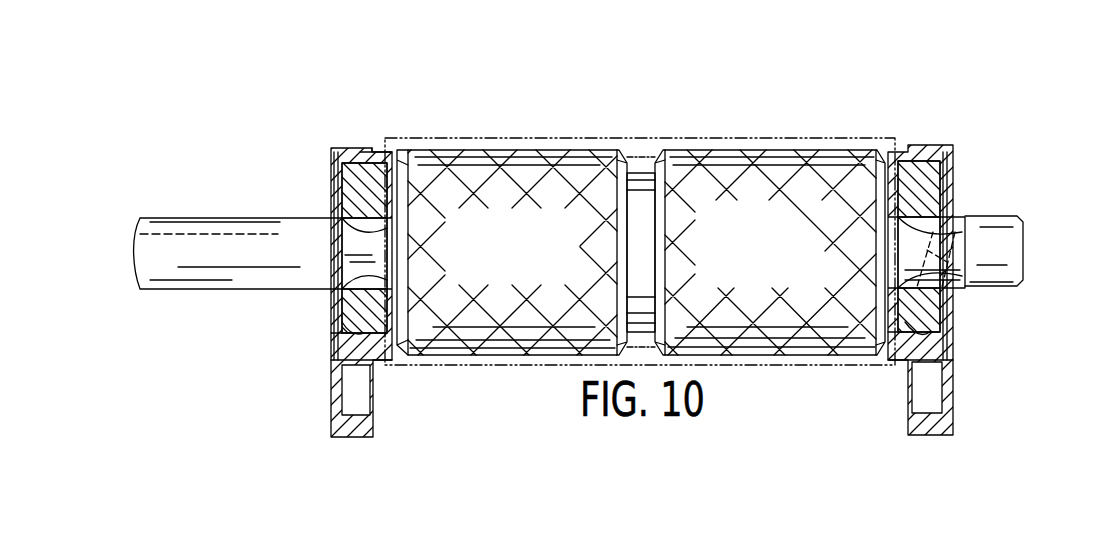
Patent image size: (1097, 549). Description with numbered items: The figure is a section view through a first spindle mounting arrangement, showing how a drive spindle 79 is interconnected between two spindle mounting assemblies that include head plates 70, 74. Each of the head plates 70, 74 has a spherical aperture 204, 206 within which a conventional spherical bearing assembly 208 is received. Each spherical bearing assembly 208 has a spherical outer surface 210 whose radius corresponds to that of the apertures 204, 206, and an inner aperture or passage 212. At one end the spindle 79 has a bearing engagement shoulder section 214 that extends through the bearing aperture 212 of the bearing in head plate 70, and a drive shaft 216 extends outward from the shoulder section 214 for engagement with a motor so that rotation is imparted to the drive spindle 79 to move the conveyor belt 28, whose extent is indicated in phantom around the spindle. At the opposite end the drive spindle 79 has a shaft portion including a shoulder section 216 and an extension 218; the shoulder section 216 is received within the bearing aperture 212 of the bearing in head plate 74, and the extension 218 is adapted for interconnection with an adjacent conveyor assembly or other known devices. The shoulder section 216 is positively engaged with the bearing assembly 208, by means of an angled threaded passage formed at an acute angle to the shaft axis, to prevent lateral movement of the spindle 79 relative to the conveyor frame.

The conveyor belt 28 is at (840, 132).
The head plate 70 is at (350, 144).
The head plate 74 is at (957, 143).
The drive spindle 79 is at (770, 143).
The spherical aperture 204 is at (333, 317).
The spherical aperture 206 is at (927, 333).
The spherical bearing assembly 208 is at (333, 188).
The spherical outer surface 210 is at (357, 150).
The inner aperture 212 is at (337, 238).
The bearing engagement shoulder section 214 is at (358, 253).
The drive shaft 216 is at (235, 292).
The extension 218 is at (1007, 248).